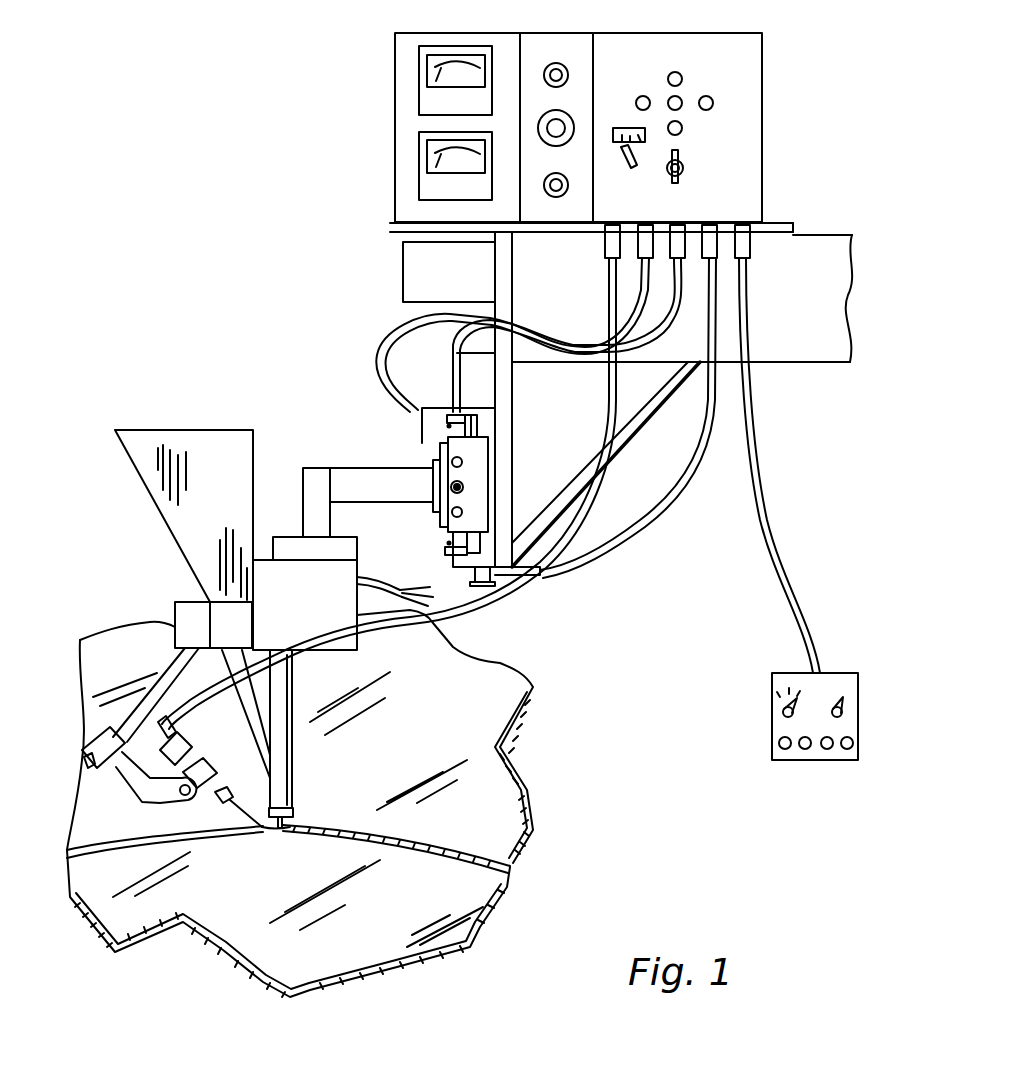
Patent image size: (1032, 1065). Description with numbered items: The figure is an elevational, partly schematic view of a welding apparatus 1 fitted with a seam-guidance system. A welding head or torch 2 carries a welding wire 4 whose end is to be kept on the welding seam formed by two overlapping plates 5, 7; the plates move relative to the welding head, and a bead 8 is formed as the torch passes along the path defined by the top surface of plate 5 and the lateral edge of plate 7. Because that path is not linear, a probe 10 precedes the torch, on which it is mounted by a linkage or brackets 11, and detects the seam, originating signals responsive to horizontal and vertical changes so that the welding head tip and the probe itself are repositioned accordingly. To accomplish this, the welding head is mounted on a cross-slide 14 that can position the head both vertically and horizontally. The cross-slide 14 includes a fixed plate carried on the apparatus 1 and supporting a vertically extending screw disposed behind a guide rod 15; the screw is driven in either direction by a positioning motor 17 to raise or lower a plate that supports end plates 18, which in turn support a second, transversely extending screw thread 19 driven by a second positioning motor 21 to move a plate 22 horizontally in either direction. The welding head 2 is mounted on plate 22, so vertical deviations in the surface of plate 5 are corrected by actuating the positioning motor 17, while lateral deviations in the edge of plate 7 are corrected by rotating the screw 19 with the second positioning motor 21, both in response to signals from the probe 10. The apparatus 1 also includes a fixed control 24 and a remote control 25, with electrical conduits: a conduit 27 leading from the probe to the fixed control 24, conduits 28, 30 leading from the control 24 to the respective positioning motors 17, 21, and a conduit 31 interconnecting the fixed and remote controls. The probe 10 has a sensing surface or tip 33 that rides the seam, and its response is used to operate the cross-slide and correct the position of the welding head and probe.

The welding apparatus 1 is at (487, 617).
The welding head or torch 2 is at (300, 766).
The welding wire 4 is at (294, 823).
The plate 5 is at (288, 911).
The plate 7 is at (300, 736).
The bead 8 is at (514, 866).
The probe 10 is at (210, 802).
The linkage or brackets 11 is at (115, 718).
The cross-slide 14 is at (498, 472).
The guide rod 15 is at (472, 428).
The positioning motor 17 is at (422, 428).
The end plates 18 is at (480, 482).
The second transversely extending screw thread 19 is at (451, 486).
The second positioning motor 21 is at (492, 590).
The plate 22 is at (440, 512).
The fixed control 24 is at (637, 34).
The remote control 25 is at (836, 673).
The electrical conduit 27 is at (397, 624).
The electrical conduit 28 is at (378, 368).
The electrical conduit 30 is at (646, 514).
The electrical conduit 31 is at (773, 552).
The sensing surface or tip 33 is at (266, 831).